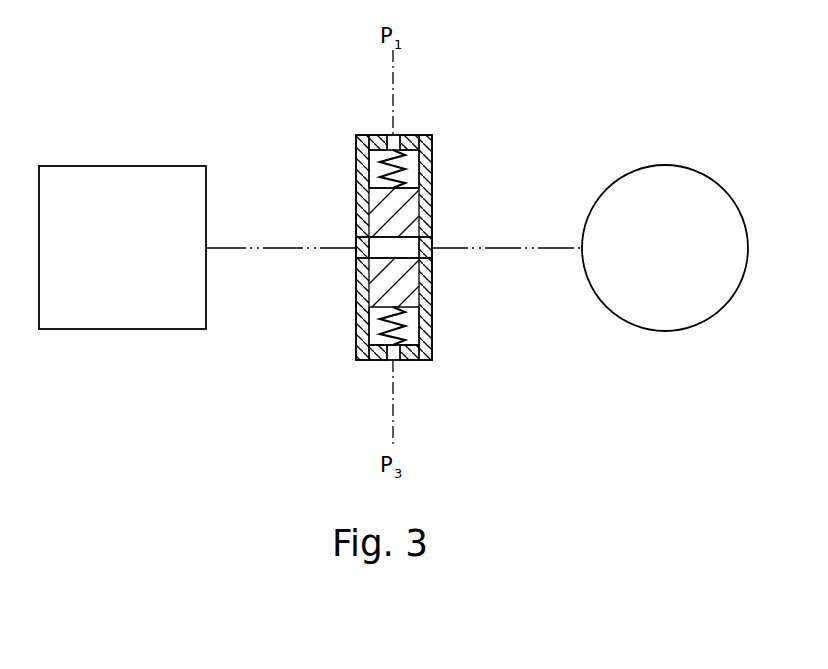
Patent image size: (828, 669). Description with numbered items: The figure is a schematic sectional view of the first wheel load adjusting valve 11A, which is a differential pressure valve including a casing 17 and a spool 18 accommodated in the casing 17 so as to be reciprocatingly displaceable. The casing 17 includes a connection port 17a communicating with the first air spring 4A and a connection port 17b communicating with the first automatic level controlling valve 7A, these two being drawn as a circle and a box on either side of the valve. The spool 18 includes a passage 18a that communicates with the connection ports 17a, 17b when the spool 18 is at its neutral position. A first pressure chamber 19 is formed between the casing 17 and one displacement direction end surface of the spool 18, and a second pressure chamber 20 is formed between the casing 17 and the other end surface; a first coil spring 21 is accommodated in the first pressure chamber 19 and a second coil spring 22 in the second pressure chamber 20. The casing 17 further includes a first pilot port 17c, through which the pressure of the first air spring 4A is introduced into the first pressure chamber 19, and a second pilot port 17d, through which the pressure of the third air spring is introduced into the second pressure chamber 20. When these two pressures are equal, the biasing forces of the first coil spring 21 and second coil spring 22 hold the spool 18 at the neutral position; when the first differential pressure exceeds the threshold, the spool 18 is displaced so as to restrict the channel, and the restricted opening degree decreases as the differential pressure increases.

The first automatic level controlling valve 7A is at (117, 166).
The first air spring 4A is at (660, 167).
The first wheel load adjusting valve 11A is at (401, 242).
The casing 17 is at (432, 140).
The connection port 17a is at (432, 237).
The connection port 17b is at (356, 237).
The first pilot port 17c is at (388, 135).
The second pilot port 17d is at (388, 362).
The spool 18 is at (403, 285).
The passage 18a is at (390, 247).
The first pressure chamber 19 is at (369, 152).
The second pressure chamber 20 is at (375, 328).
The first coil spring 21 is at (408, 162).
The second coil spring 22 is at (410, 330).